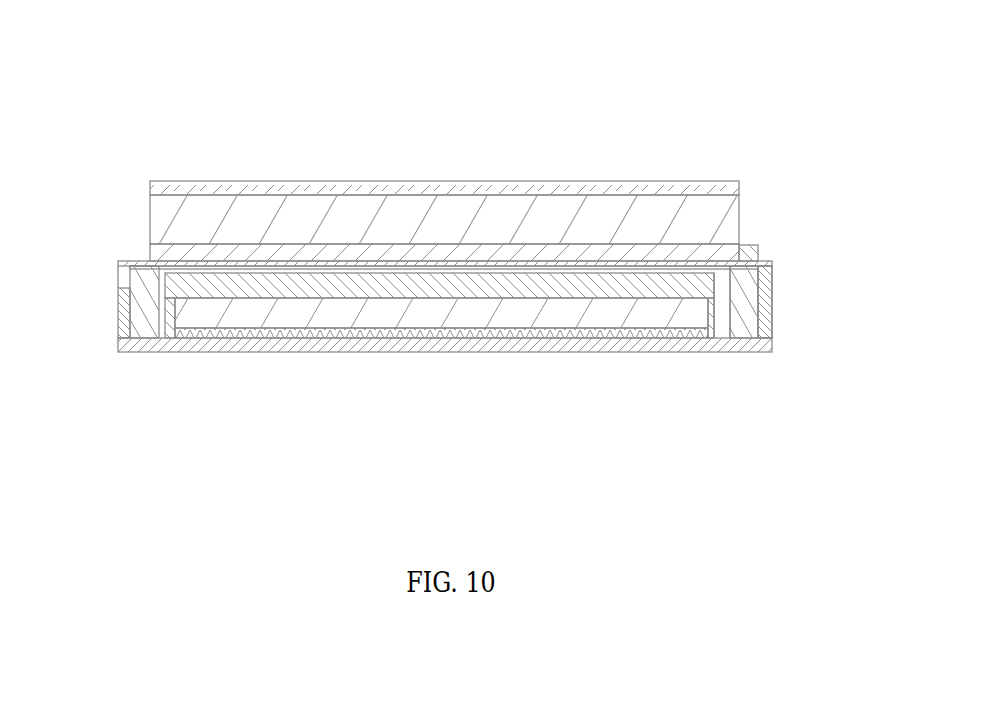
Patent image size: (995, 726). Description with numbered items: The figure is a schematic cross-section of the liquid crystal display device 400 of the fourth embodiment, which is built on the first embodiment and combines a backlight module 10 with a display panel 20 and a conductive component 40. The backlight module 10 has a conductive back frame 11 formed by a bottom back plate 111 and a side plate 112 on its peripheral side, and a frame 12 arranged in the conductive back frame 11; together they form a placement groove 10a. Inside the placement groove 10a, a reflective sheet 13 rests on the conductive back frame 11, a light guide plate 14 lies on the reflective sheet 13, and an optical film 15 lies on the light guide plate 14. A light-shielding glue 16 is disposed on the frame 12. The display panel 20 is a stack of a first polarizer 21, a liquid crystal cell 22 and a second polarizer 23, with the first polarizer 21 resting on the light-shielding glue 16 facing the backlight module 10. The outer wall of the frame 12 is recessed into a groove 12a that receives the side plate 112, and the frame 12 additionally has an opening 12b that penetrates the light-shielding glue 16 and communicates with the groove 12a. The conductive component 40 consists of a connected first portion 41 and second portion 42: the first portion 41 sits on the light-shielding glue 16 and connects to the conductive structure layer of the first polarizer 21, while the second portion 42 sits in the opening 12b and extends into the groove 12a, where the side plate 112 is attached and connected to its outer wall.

The liquid crystal display device 400 is at (713, 86).
The display panel 20 is at (72, 178).
The first polarizer 21 is at (150, 255).
The liquid crystal cell 22 is at (150, 222).
The second polarizer 23 is at (150, 190).
The conductive component 40 is at (828, 237).
The first portion 41 is at (758, 252).
The second portion 42 is at (758, 277).
The backlight module 10 is at (765, 450).
The placement groove 10a is at (713, 330).
The conductive back frame 11 is at (193, 398).
The bottom back plate 111 is at (188, 346).
The side plate 112 is at (125, 340).
The frame 12 is at (743, 313).
The groove 12a is at (118, 307).
The opening 12b is at (773, 287).
The reflective sheet 13 is at (379, 330).
The light guide plate 14 is at (447, 302).
The optical film 15 is at (498, 287).
The light-shielding glue 16 is at (718, 262).